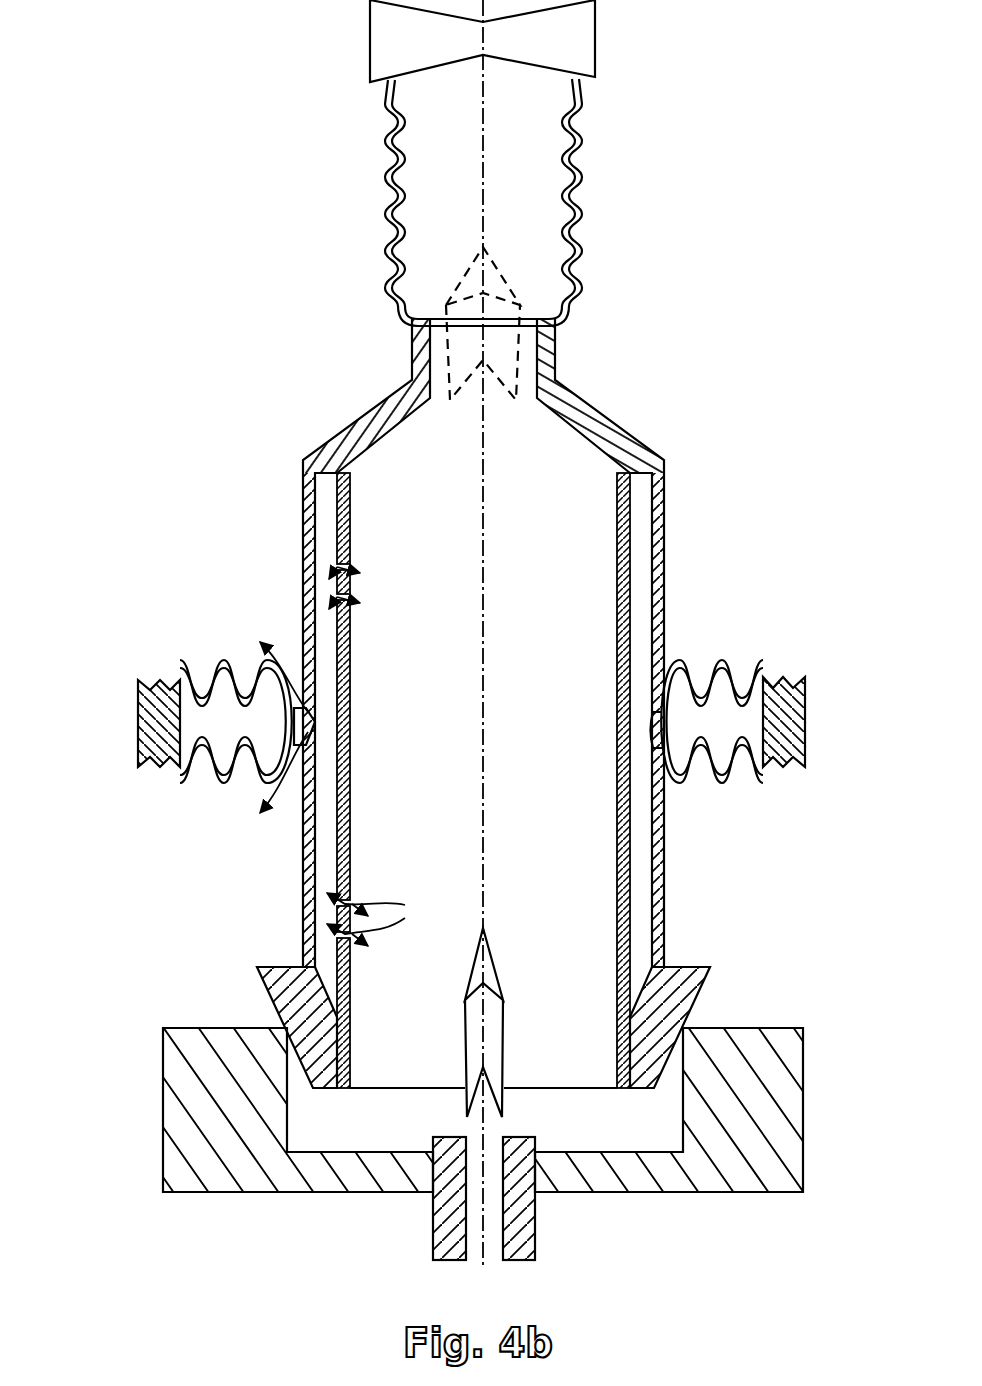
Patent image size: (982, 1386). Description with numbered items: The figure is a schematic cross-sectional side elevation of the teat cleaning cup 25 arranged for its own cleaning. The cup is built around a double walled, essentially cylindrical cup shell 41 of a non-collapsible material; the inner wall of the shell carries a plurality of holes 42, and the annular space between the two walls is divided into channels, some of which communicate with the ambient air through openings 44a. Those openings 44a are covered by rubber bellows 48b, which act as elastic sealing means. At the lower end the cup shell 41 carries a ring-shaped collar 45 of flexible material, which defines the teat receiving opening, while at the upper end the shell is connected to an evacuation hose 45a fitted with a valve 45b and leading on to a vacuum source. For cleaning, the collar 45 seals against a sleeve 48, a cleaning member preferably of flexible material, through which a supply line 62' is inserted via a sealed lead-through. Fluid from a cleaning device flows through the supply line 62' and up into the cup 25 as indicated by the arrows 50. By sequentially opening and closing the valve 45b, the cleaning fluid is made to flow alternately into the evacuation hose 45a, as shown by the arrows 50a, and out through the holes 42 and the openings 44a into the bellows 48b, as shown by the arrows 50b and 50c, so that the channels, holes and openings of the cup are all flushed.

The teat cleaning cup 25 is at (120, 465).
The double walled cup shell 41 is at (665, 882).
The holes 42 is at (352, 566).
The openings 44a is at (315, 722).
The ring-shaped collar 45 is at (708, 972).
The evacuation hose 45a is at (581, 172).
The valve 45b is at (597, 42).
The sleeve 48 is at (163, 1100).
The rubber bellows 48b is at (722, 662).
The arrows 50 is at (500, 1038).
The arrows 50a is at (458, 368).
The arrows 50b is at (337, 597).
The arrows 50c is at (262, 648).
The supply line 62' is at (445, 1198).